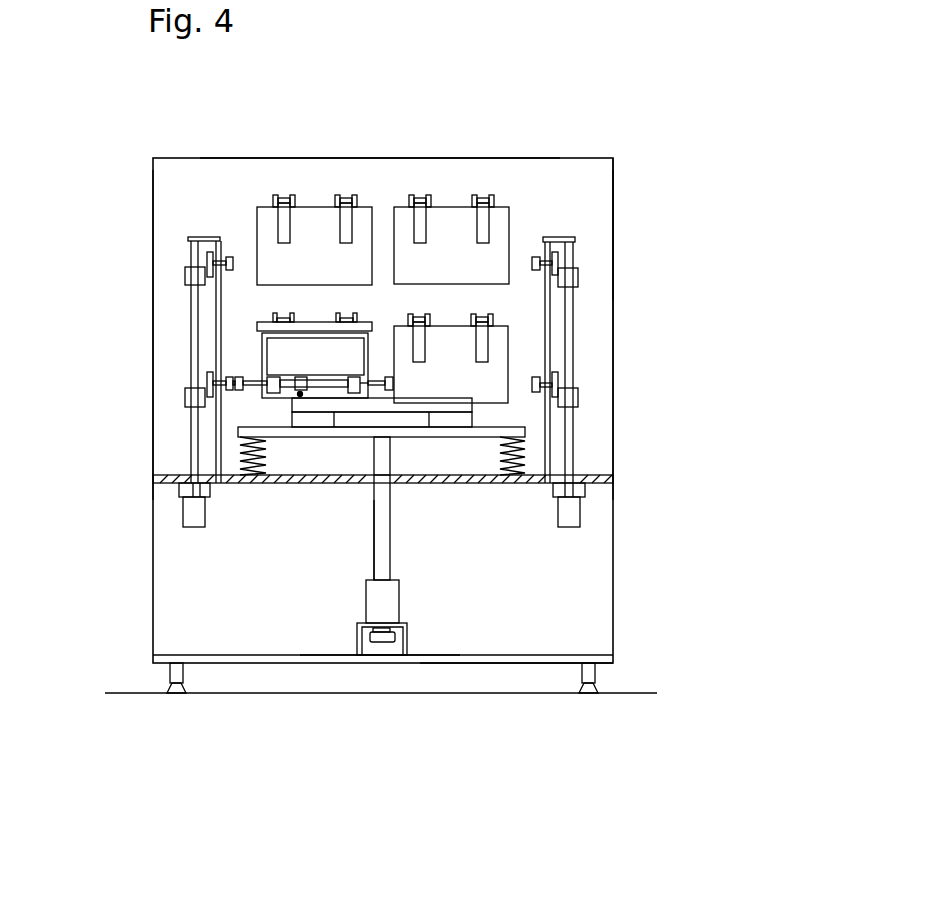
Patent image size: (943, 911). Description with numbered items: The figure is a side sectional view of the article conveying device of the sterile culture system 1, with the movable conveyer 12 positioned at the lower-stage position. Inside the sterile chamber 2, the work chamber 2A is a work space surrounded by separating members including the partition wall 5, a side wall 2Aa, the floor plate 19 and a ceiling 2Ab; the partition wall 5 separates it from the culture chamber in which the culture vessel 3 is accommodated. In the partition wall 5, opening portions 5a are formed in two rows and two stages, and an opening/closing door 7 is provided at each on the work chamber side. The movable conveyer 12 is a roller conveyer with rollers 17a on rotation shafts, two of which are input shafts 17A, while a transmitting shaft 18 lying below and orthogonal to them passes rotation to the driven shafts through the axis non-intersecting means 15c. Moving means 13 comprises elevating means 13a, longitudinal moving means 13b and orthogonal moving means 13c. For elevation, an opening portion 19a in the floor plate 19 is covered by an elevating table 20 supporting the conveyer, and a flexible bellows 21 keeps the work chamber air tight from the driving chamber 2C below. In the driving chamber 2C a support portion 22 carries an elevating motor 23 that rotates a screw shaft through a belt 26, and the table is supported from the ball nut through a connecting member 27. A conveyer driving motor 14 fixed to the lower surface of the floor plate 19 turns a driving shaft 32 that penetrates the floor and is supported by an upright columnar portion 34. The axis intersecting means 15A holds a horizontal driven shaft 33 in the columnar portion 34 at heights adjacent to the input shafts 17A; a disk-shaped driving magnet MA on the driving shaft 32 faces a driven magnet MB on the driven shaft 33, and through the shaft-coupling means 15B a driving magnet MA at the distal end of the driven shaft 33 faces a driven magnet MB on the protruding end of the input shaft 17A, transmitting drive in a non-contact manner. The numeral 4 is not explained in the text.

The sterile culture system 1 is at (425, 138).
The sterile chamber 2 is at (197, 157).
The work chamber 2A is at (170, 214).
The driving chamber 2C is at (555, 599).
The side wall 2Aa is at (153, 188).
The ceiling 2Ab is at (353, 160).
The culture vessel 3 is at (365, 351).
The lifting unit 4 is at (466, 529).
The partition wall 5 is at (582, 178).
The opening portions 5a is at (372, 327).
The opening/closing door 7 is at (313, 207).
The movable conveyer 12 is at (300, 396).
The moving means 13 is at (342, 674).
The elevating means 13a is at (392, 560).
The longitudinal moving means 13b is at (458, 424).
The orthogonal moving means 13c is at (567, 362).
The conveyer driving motor 14 is at (183, 510).
The axis intersecting means 15A is at (188, 254).
The shaft-coupling means 15B is at (234, 376).
The axis non-intersecting means 15c is at (303, 376).
The input shaft 17A is at (337, 383).
The roller 17a is at (238, 392).
The transmitting shaft 18 is at (274, 386).
The floor plate 19 is at (598, 478).
The opening portion 19a is at (493, 484).
The elevating table 20 is at (412, 436).
The bellows 21 is at (540, 433).
The support portion 22 is at (517, 661).
The elevating motor 23 is at (400, 600).
The belt 26 is at (383, 640).
The connecting member 27 is at (391, 530).
The driving shaft 32 is at (193, 300).
The driven shaft 33 is at (213, 262).
The columnar portion 34 is at (218, 323).
The driving magnet MA is at (234, 258).
The driven magnet MB is at (393, 383).